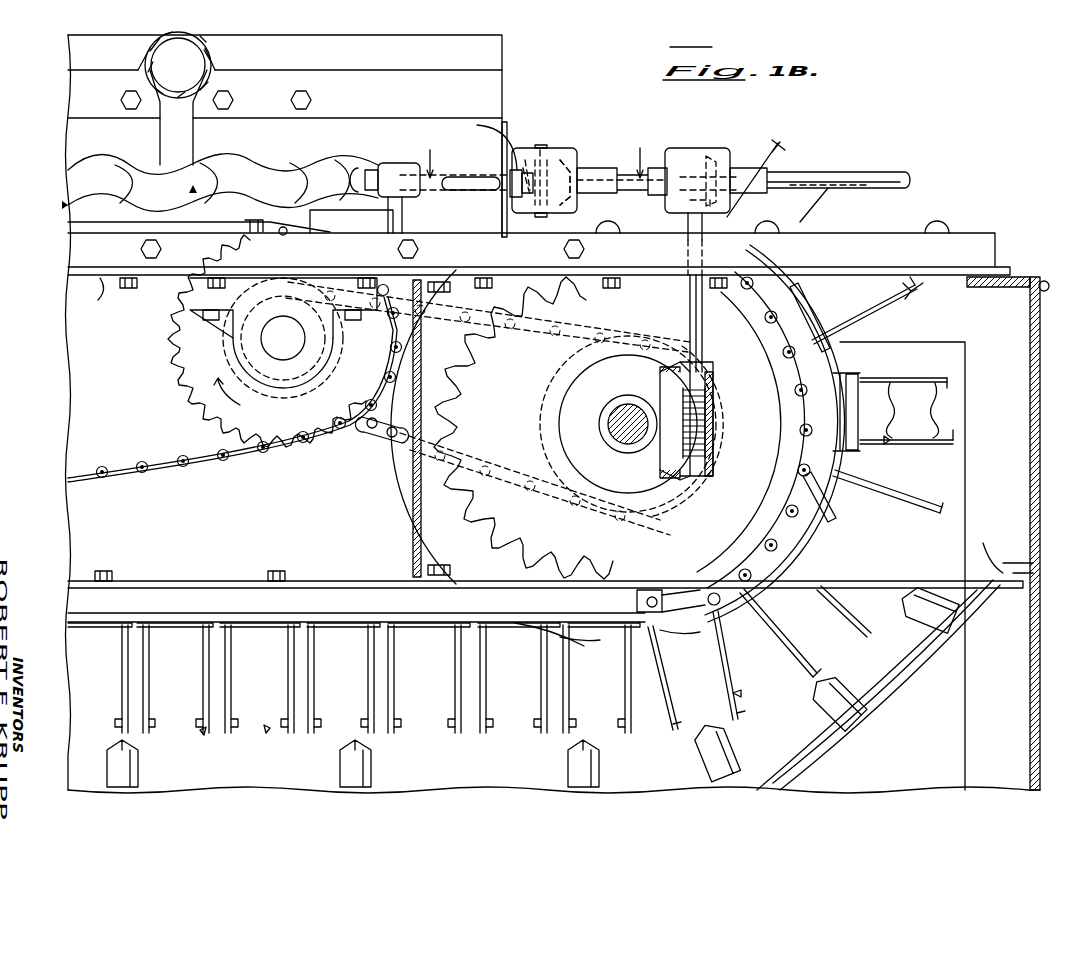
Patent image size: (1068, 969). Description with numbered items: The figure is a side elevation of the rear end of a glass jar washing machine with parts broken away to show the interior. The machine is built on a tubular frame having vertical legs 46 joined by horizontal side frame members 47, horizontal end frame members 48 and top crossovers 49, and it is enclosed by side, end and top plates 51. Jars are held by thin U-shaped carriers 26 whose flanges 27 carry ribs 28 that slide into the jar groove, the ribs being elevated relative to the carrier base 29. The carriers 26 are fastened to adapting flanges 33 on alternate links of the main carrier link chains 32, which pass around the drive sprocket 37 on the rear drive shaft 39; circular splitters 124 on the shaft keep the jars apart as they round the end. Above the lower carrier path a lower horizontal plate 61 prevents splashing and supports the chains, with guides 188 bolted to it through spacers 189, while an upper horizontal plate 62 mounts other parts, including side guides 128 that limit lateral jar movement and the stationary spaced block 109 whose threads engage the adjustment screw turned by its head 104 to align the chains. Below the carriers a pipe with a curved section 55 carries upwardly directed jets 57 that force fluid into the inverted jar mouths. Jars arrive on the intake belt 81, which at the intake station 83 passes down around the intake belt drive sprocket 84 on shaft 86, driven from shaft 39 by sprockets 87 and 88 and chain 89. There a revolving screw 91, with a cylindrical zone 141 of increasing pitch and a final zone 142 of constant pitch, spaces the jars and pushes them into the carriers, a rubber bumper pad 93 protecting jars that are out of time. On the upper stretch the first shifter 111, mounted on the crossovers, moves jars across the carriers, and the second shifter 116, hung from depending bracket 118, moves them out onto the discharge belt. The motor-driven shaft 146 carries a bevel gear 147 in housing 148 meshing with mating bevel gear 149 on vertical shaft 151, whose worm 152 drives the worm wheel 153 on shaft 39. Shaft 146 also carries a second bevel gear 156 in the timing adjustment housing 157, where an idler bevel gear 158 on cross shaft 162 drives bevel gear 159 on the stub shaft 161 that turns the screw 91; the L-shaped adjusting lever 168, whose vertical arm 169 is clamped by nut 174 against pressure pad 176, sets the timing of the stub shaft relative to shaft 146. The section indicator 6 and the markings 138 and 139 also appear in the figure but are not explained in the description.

The section line 6- 6 is at (535, 150).
The carriers 26 is at (268, 730).
The flanges 27 is at (622, 676).
The ribs 28 is at (625, 708).
The base 29 is at (580, 642).
The main carrier link chains 32 is at (800, 378).
The adapting flanges 33 is at (810, 305).
The drive sprocket 37 is at (746, 496).
The drive shaft 39 is at (614, 414).
The vertical legs 46 is at (1012, 720).
The horizontal side frame members 47 is at (952, 331).
The horizontal end frame members 48 is at (1040, 300).
The horizontal top crossovers 49 is at (212, 62).
The side, end and top plates 51 is at (1030, 463).
The curved pipe section 55 is at (965, 640).
The jets 57 is at (140, 761).
The lower horizontal plate 61 is at (372, 580).
The upper horizontal plate 62 is at (870, 272).
The intake belt 81 is at (205, 465).
The intake station 83 is at (63, 206).
The intake belt drive sprocket 84 is at (207, 386).
The shaft 86 is at (280, 335).
The sprocket 87 is at (545, 417).
The sprocket 88 is at (325, 351).
The chain 89 is at (388, 440).
The revolving screw 91 is at (193, 187).
The rubber bumper pad 93 is at (205, 162).
The head 104 is at (140, 250).
The stationary spaced block 109 is at (337, 256).
The first shifter 111 is at (354, 137).
The second shifter 116 is at (148, 144).
The depending bracket 118 is at (108, 106).
The circular splitters 124 is at (430, 462).
The side guides 128 is at (345, 632).
The screw end 138 is at (90, 170).
The screw end 139 is at (118, 205).
The cylindrical zone 141 is at (262, 188).
The final zone 142 is at (360, 188).
The shaft 146 is at (885, 173).
The bevel gear 147 is at (735, 147).
The housing 148 is at (690, 150).
The mating bevel gear 149 is at (688, 225).
The vertical shaft 151 is at (690, 293).
The worm 152 is at (715, 415).
The worm wheel 153 is at (670, 446).
The second bevel gear 156 is at (590, 165).
The timing adjustment housing 157 is at (570, 150).
The idler bevel gear 158 is at (563, 210).
The bevel gear 159 is at (525, 150).
The stub shaft 161 is at (470, 177).
The cross shaft 162 is at (545, 148).
The L-shaped adjusting lever 168 is at (484, 143).
The vertical arm 169 is at (502, 122).
The nut 174 is at (528, 196).
The pressure pad 176 is at (512, 185).
The guides 188 is at (506, 605).
The spacer 189 is at (435, 609).